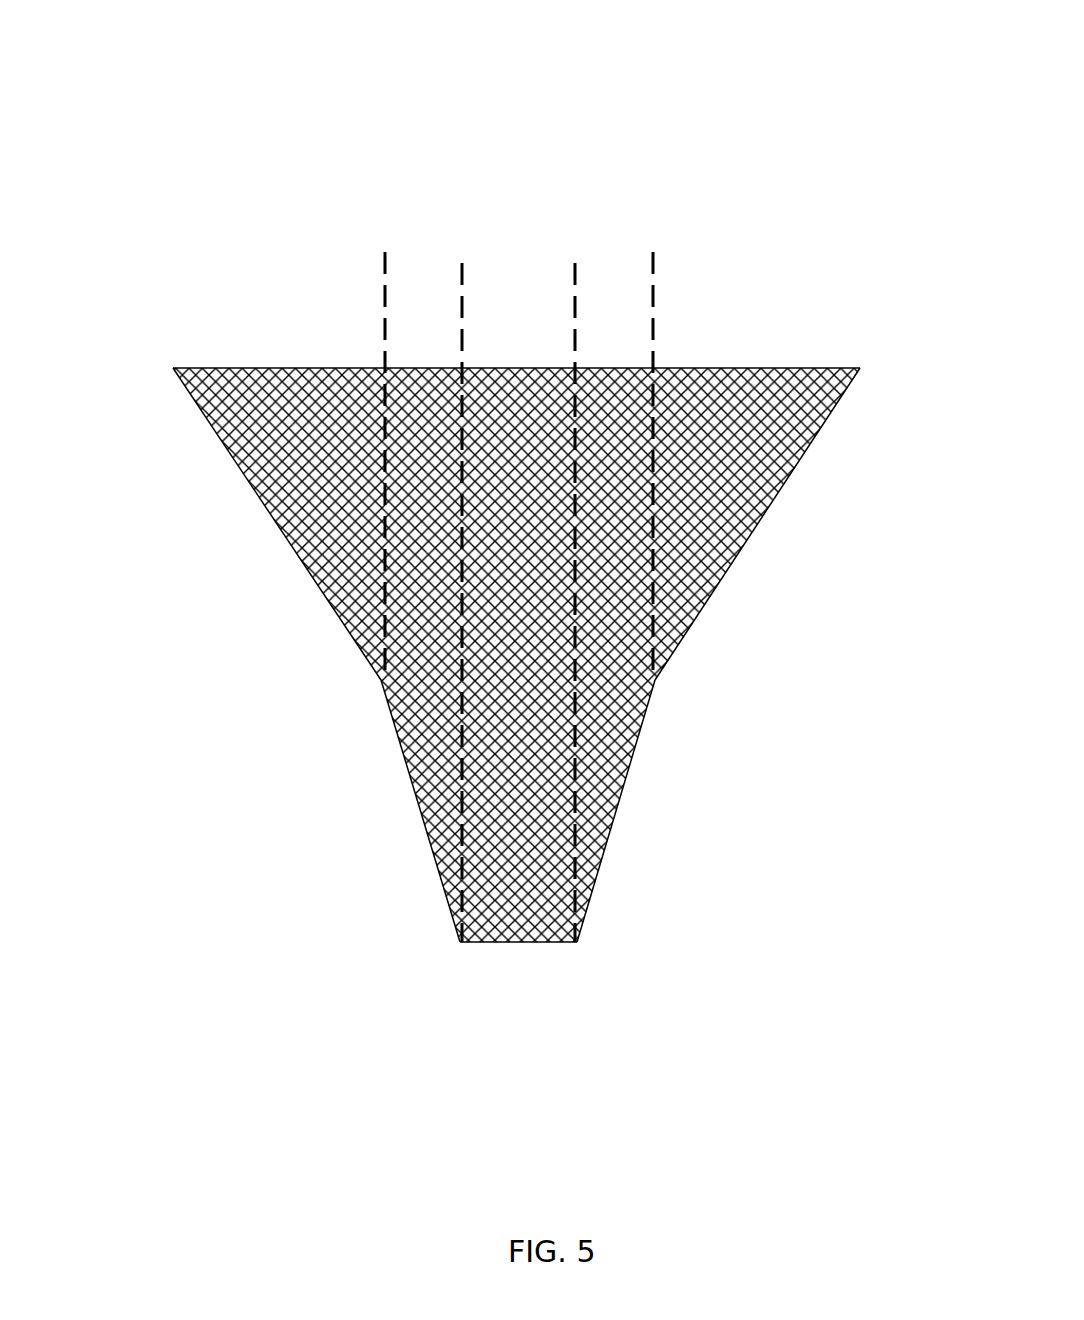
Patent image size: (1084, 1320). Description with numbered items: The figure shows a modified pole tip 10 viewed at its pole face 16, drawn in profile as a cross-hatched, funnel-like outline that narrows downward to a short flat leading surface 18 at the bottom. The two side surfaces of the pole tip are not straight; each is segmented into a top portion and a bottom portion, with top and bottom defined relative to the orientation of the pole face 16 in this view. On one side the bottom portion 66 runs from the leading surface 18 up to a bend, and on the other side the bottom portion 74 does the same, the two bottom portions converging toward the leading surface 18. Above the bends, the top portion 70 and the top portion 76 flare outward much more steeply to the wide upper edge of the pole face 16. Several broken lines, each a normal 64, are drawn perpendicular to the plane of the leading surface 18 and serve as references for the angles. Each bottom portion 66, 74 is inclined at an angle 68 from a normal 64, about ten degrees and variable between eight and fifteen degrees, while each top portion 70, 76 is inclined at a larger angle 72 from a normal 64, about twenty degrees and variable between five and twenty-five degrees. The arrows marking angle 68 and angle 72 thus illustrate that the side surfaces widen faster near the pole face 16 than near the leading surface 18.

The modified pole tip 10 is at (468, 46).
The pole face 16 is at (270, 405).
The leading surface 18 is at (507, 942).
The normal 64 is at (382, 263).
The bottom portion 66 is at (600, 862).
The angle 68 is at (462, 762).
The top portion 70 is at (735, 557).
The angle 72 is at (243, 473).
The bottom portion 74 is at (437, 862).
The top portion 76 is at (300, 557).